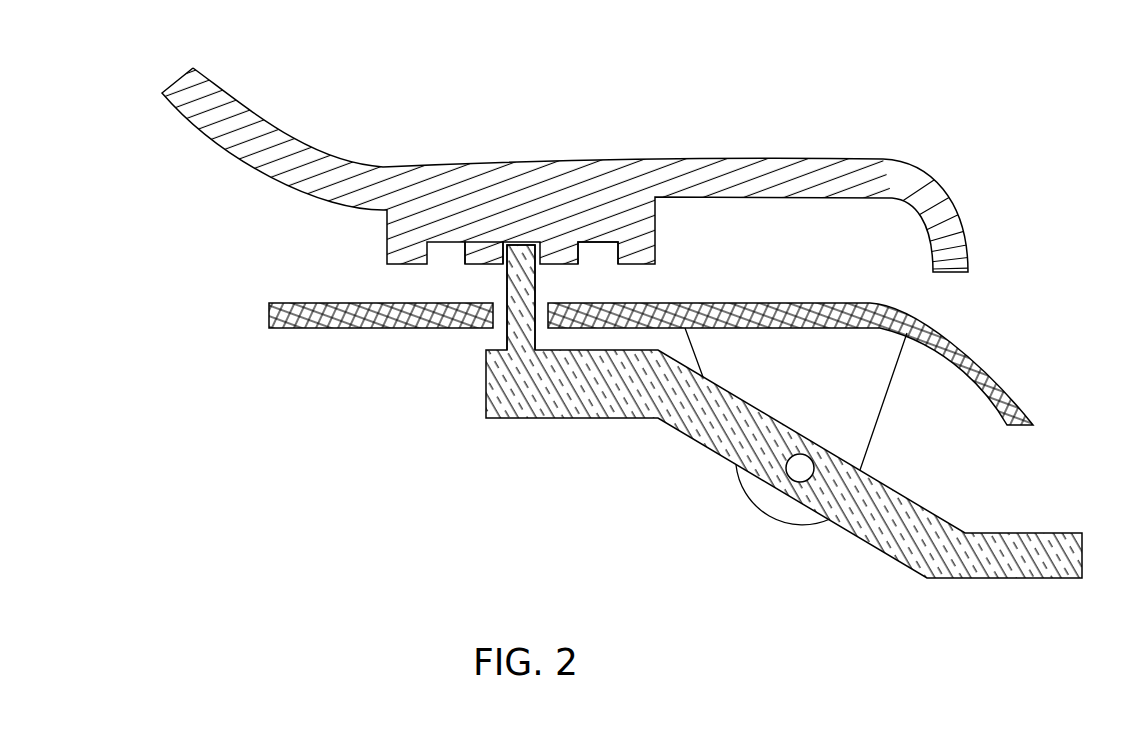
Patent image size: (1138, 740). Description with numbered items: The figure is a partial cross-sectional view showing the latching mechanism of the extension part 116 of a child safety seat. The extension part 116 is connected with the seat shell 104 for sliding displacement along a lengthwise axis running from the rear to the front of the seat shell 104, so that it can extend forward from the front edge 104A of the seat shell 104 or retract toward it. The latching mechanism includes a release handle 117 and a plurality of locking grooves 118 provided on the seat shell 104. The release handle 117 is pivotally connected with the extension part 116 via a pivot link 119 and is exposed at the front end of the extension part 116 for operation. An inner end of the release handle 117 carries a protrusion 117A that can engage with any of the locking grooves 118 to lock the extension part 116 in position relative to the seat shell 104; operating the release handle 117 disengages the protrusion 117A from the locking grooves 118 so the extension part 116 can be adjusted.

The seat shell 104 is at (736, 160).
The front edge 104A is at (967, 227).
The extension part 116 is at (993, 360).
The release handle 117 is at (952, 558).
The protrusion 117A is at (528, 258).
The locking grooves 118 is at (537, 238).
The pivot link 119 is at (800, 468).